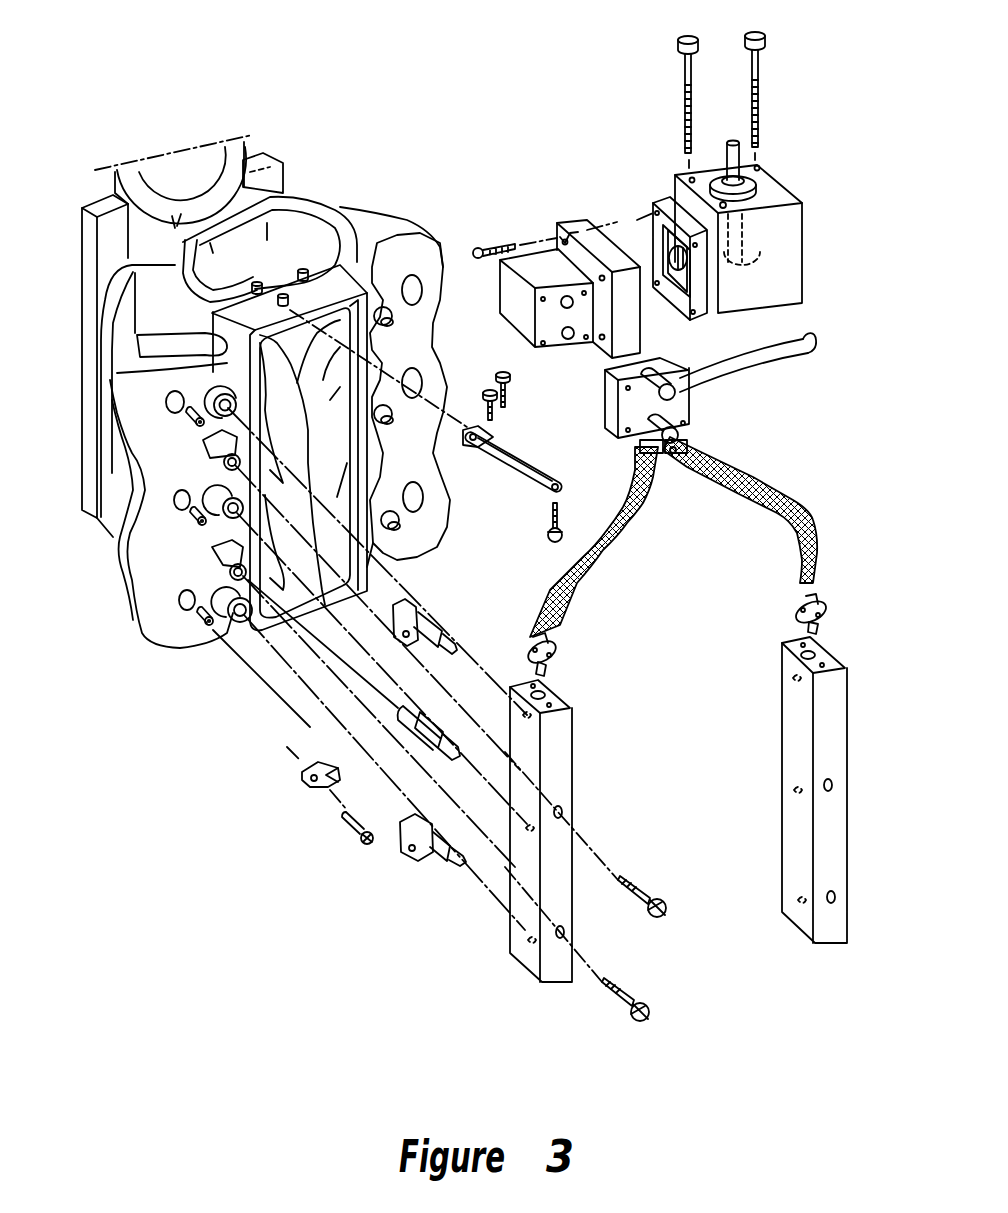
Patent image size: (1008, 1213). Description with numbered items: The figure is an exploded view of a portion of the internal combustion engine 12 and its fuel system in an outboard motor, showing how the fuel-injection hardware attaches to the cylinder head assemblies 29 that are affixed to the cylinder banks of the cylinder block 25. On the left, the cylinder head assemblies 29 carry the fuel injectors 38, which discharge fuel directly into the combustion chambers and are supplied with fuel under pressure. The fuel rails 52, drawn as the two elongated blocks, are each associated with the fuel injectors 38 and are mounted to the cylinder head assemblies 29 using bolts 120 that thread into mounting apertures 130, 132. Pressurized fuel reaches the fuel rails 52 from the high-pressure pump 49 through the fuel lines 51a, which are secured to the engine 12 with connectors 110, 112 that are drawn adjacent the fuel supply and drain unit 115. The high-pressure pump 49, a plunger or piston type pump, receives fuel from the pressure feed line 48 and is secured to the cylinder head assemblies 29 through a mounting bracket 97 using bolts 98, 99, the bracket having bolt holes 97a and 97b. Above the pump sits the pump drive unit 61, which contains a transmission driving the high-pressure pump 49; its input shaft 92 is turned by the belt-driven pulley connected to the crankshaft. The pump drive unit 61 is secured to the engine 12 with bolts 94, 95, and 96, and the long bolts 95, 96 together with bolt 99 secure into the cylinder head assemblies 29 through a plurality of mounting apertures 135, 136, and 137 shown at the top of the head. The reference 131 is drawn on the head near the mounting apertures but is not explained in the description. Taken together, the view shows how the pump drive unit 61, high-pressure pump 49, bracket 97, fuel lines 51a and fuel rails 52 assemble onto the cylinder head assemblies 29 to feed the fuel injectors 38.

The internal combustion engine 12 is at (435, 215).
The cylinder block 25 is at (343, 277).
The cylinder head assemblies 29 is at (177, 640).
The fuel injectors 38 is at (433, 623).
The pressure feed line 48 is at (808, 362).
The high-pressure pump 49 is at (532, 262).
The fuel lines 51a is at (737, 500).
The fuel rails 52 is at (567, 985).
The pump drive unit 61 is at (777, 182).
The input shaft 92 is at (728, 137).
The bolt 94 is at (553, 542).
The bolt 95 is at (683, 83).
The bolt 96 is at (758, 80).
The mounting bracket 97 is at (527, 484).
The bolt hole 97a is at (475, 448).
The bolt hole 97b is at (556, 480).
The bolt 98 is at (475, 258).
The bolt 99 is at (508, 397).
The connector 110 is at (827, 613).
The connector 112 is at (653, 380).
The fuel supply and drain unit 115 is at (690, 397).
The bolts 120 is at (625, 992).
The mounting aperture 130 is at (232, 628).
The bolt 131 is at (212, 620).
The mounting aperture 132 is at (212, 550).
The mounting aperture 135 is at (257, 284).
The mounting aperture 136 is at (283, 296).
The mounting aperture 137 is at (303, 270).